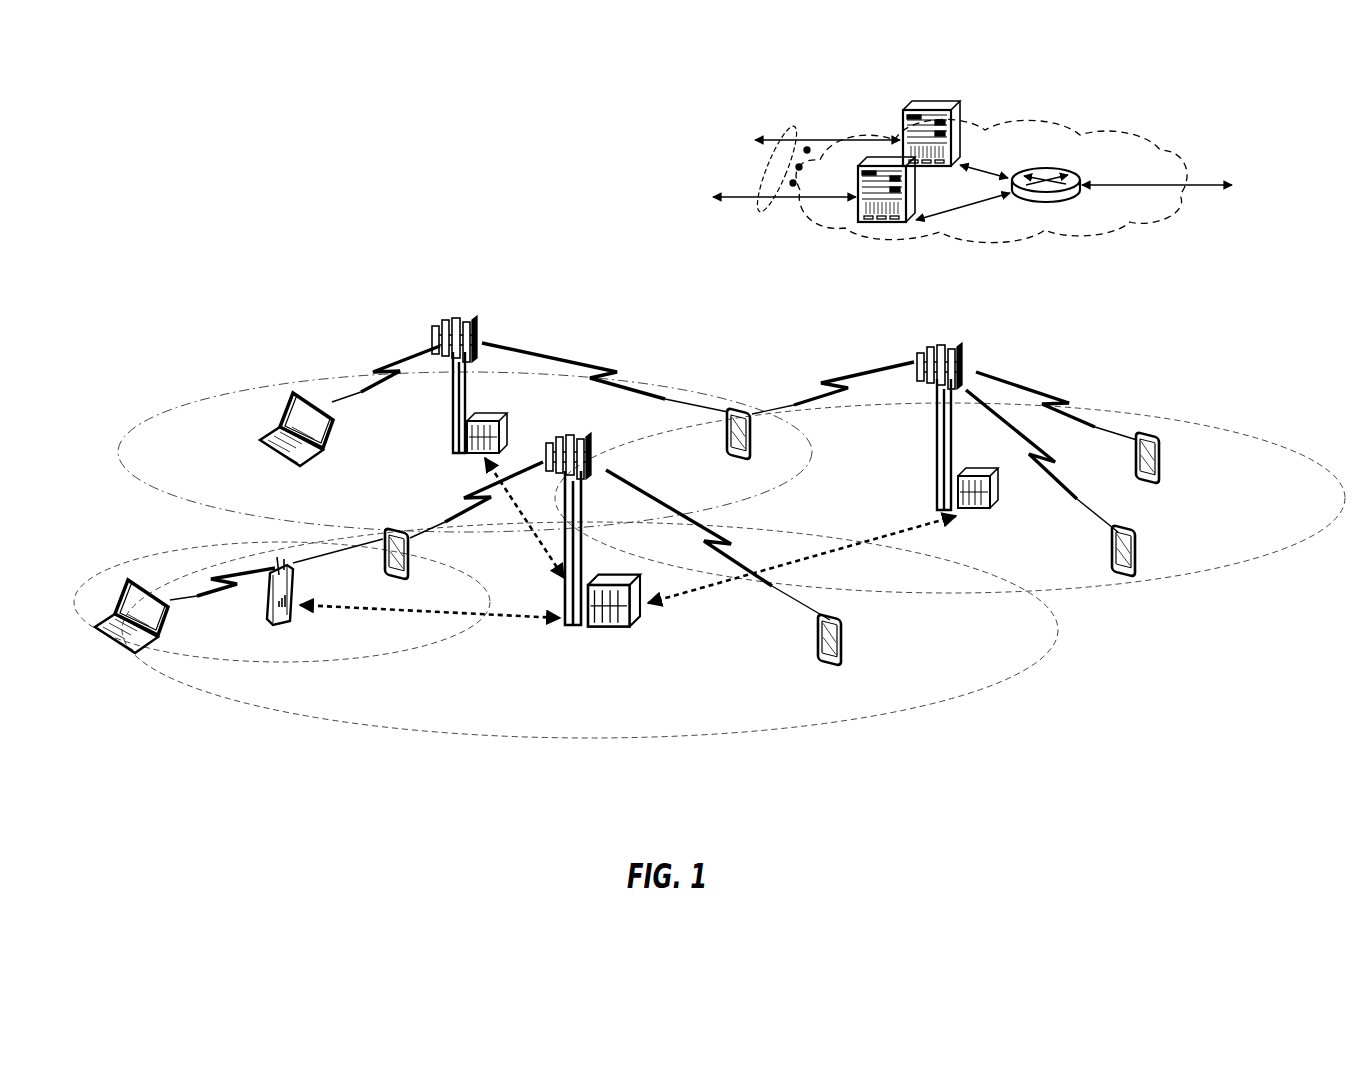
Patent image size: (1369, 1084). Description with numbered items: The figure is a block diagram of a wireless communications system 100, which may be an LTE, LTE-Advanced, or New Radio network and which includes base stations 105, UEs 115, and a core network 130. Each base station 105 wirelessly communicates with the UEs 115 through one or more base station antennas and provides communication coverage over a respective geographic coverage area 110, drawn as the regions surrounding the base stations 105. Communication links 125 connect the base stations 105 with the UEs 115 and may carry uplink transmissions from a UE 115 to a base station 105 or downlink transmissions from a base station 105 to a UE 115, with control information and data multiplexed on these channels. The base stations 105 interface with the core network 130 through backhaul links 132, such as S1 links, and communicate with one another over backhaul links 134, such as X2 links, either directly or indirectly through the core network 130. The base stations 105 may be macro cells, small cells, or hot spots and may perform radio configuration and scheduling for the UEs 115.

The wireless communications system 100 is at (1190, 780).
The base station 105 is at (455, 438).
The geographic coverage area 110 is at (152, 493).
The UE 115 is at (270, 452).
The communication link 125 is at (378, 376).
The core network 130 is at (1020, 240).
The backhaul link 132 is at (762, 212).
The backhaul link 134 is at (525, 505).